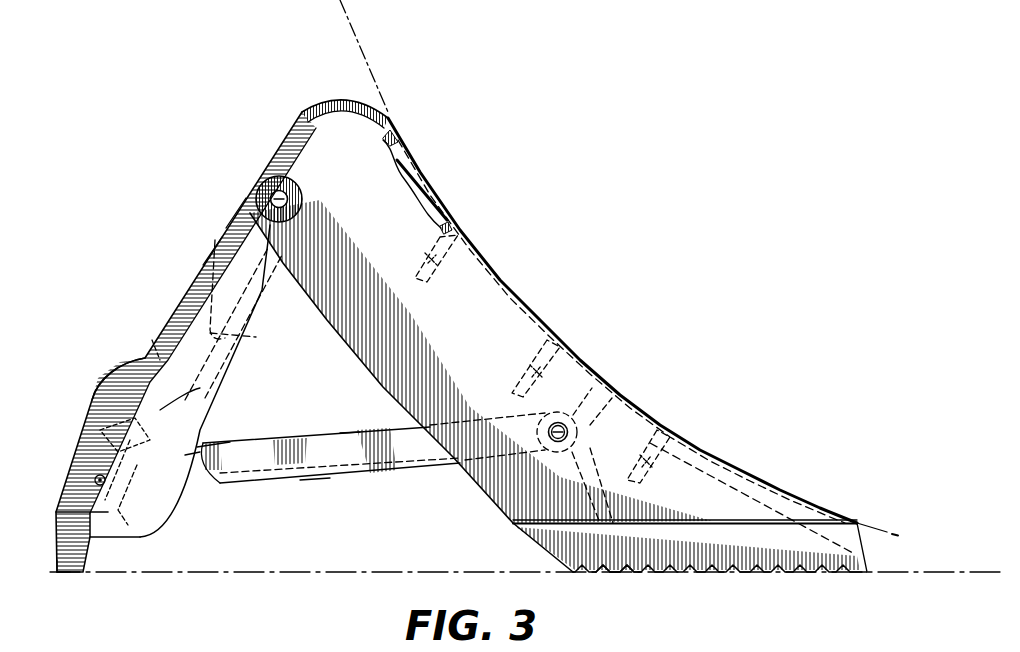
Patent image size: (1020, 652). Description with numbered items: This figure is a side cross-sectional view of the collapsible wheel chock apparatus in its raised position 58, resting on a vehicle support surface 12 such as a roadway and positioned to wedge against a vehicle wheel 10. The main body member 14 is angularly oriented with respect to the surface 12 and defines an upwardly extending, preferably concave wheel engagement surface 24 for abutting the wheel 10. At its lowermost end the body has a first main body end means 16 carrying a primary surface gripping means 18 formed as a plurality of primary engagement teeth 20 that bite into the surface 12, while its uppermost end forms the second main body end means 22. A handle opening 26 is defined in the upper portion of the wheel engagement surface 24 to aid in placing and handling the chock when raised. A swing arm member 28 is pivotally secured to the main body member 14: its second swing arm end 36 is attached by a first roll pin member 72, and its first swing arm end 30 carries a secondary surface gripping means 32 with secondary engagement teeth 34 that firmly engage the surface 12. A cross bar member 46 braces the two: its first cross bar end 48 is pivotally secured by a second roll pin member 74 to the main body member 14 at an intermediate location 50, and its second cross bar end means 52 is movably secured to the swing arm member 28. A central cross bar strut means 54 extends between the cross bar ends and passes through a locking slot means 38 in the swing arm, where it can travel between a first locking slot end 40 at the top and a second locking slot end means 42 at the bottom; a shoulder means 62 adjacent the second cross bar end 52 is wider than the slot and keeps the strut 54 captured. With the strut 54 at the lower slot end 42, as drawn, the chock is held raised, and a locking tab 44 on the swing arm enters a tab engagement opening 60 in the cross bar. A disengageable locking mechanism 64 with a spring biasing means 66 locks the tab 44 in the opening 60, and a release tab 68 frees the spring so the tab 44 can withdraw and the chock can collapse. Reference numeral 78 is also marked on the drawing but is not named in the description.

The vehicle wheel 10 is at (342, 42).
The vehicle support surface 12 is at (333, 573).
The main body member 14 is at (452, 349).
The first main body end means 16 is at (563, 543).
The primary surface gripping means 18 is at (733, 575).
The primary engagement teeth 20 is at (677, 575).
The second main body end means 22 is at (338, 152).
The wheel engagement surface 24 is at (492, 263).
The handle opening 26 is at (420, 172).
The swing arm member 28 is at (243, 215).
The first swing arm end 30 is at (92, 455).
The secondary surface gripping means 32 is at (62, 573).
The secondary engagement teeth 34 is at (73, 577).
The second swing arm end 36 is at (226, 228).
The locking slot means 38 is at (177, 330).
The first locking slot end 40 is at (256, 337).
The second locking slot end means 42 is at (160, 410).
The locking tab 44 is at (190, 452).
The cross bar member 46 is at (373, 475).
The first cross bar end 48 is at (535, 448).
The intermediate location 50 is at (585, 360).
The second cross bar end means 52 is at (197, 447).
The central cross bar strut means 54 is at (315, 483).
The raised position 58 is at (350, 432).
The tab engagement opening 60 is at (92, 447).
The shoulder means 62 is at (100, 430).
The disengageable locking mechanism 64 is at (133, 425).
The spring biasing means 66 is at (137, 465).
The release tab 68 is at (152, 340).
The first roll pin member 72 is at (277, 192).
The second roll pin member 74 is at (567, 423).
The arm edge 78 is at (203, 265).